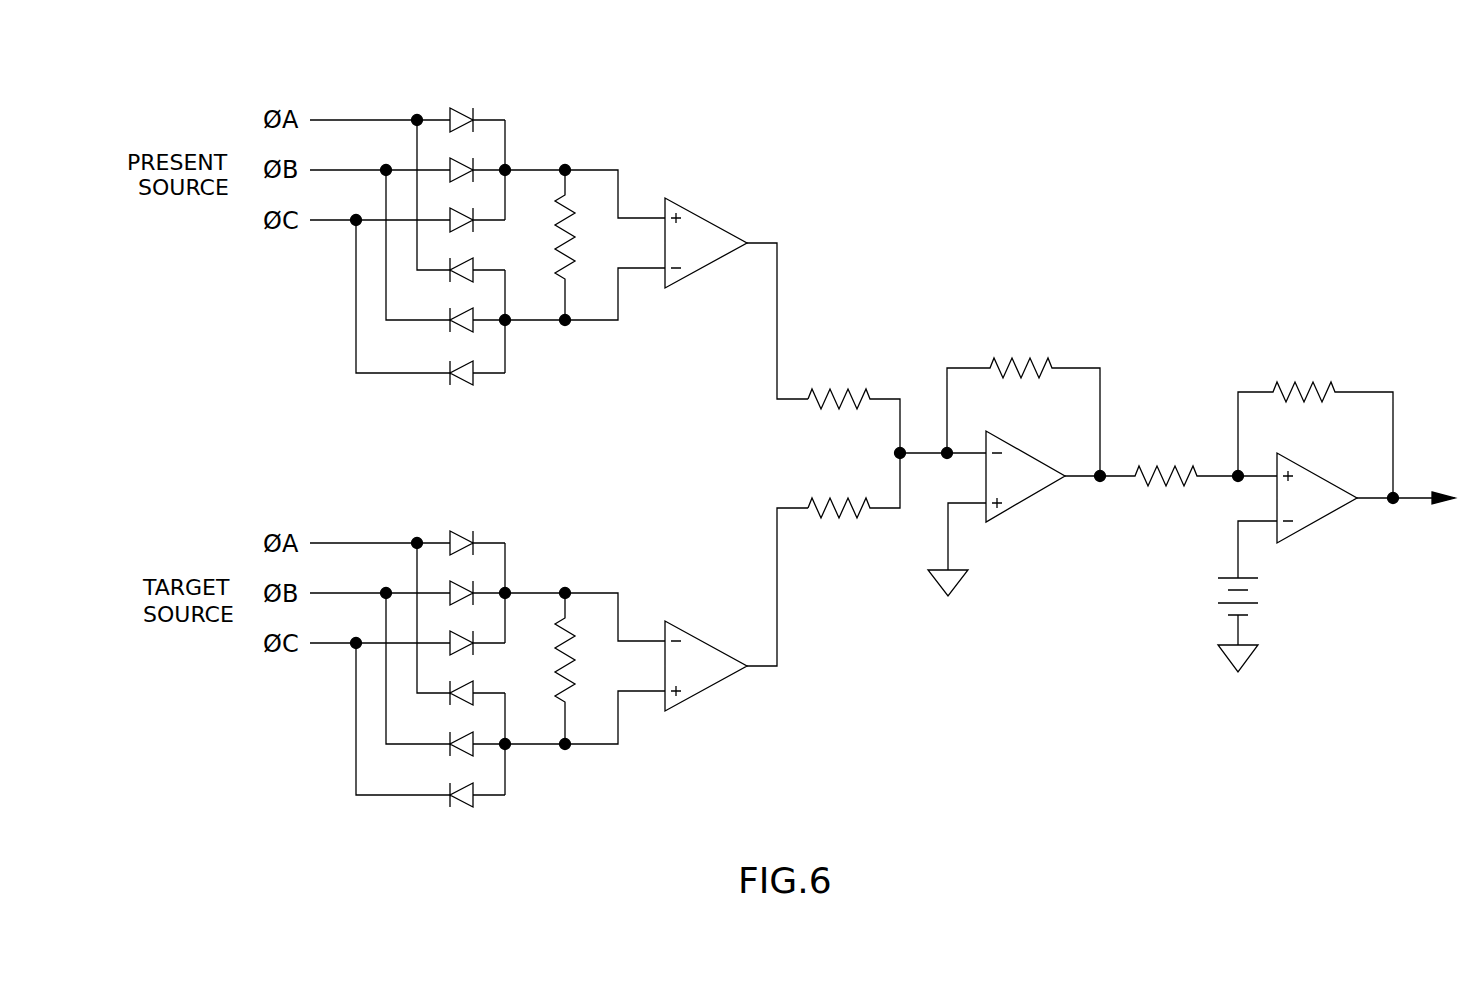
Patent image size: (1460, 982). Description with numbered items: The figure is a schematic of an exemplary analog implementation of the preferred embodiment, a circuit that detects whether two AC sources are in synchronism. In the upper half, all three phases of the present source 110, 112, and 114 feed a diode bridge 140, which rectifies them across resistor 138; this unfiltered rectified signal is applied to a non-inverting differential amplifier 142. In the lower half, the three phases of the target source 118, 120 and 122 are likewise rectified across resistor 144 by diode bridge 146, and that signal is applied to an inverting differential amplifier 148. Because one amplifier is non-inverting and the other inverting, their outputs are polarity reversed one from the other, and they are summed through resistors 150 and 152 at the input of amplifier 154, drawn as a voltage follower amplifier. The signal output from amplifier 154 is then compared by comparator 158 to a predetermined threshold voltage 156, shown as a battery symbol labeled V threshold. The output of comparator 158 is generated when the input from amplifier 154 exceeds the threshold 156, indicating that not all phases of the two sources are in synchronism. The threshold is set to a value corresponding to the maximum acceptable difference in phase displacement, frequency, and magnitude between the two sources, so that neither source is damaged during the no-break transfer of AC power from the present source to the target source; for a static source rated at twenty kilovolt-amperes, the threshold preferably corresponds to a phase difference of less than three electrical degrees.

The present source phase 110 is at (396, 118).
The present source phase 112 is at (330, 168).
The present source phase 114 is at (335, 224).
The target source phase 118 is at (396, 541).
The target source phase 120 is at (333, 591).
The target source phase 122 is at (325, 648).
The resistor 138 is at (572, 282).
The diode bridge 140 is at (494, 80).
The non-inverting differential amplifier 142 is at (697, 212).
The resistor 144 is at (575, 705).
The diode bridge 146 is at (494, 495).
The inverting differential amplifier 148 is at (697, 697).
The resistor 150 is at (812, 395).
The resistor 152 is at (815, 512).
The voltage follower amplifier 154 is at (1010, 510).
The threshold voltage 156 is at (1217, 590).
The comparator 158 is at (1310, 527).